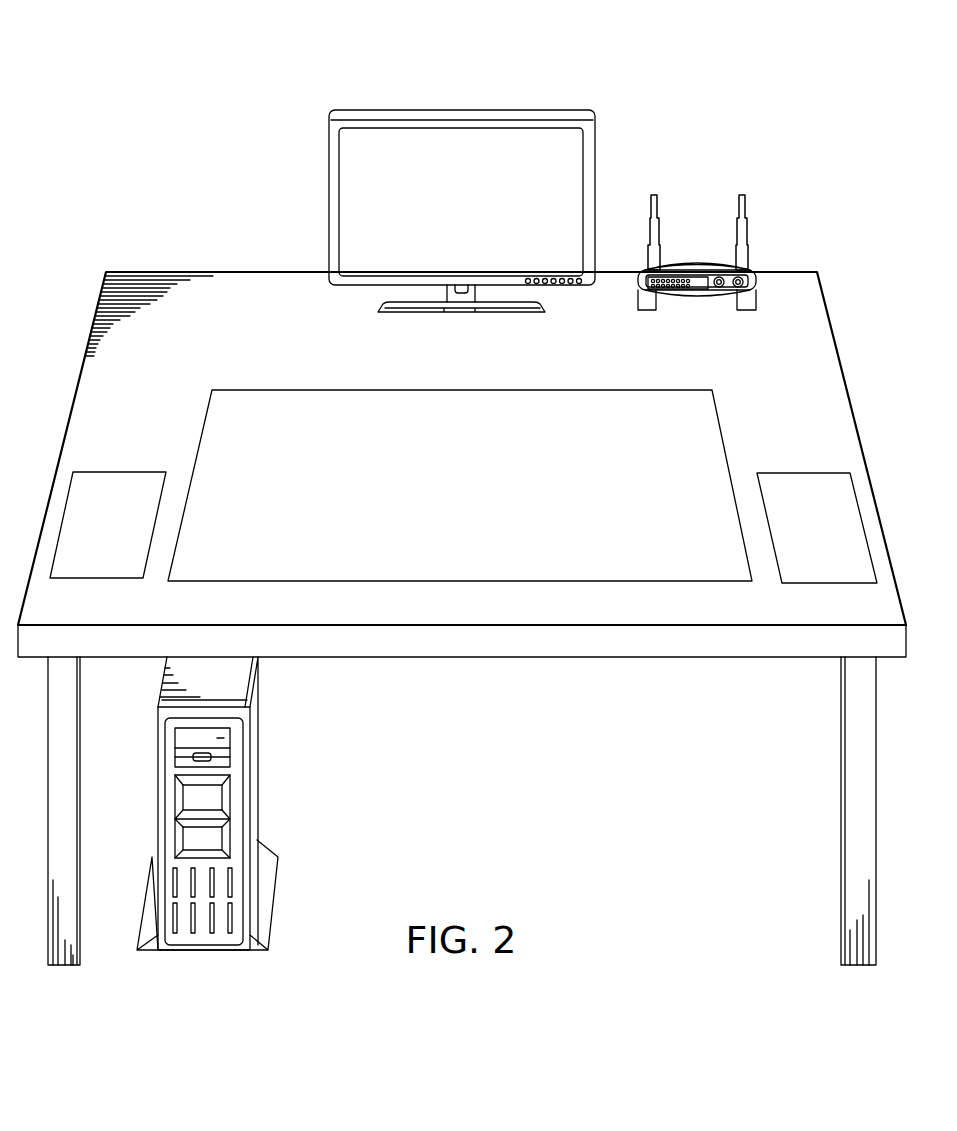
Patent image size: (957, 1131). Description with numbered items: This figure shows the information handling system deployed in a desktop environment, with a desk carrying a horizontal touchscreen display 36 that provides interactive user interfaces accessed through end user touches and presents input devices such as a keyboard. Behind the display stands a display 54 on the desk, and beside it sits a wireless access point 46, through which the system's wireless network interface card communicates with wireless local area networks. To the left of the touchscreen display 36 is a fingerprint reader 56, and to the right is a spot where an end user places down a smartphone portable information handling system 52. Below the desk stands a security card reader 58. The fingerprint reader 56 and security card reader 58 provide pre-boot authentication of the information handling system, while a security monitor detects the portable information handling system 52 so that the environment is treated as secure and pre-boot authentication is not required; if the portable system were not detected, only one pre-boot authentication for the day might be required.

The touchscreen display 36 is at (461, 390).
The wireless access point 46 is at (746, 312).
The portable information handling system 52 is at (803, 473).
The display 54 is at (462, 108).
The fingerprint reader 56 is at (120, 472).
The security card reader 58 is at (200, 952).